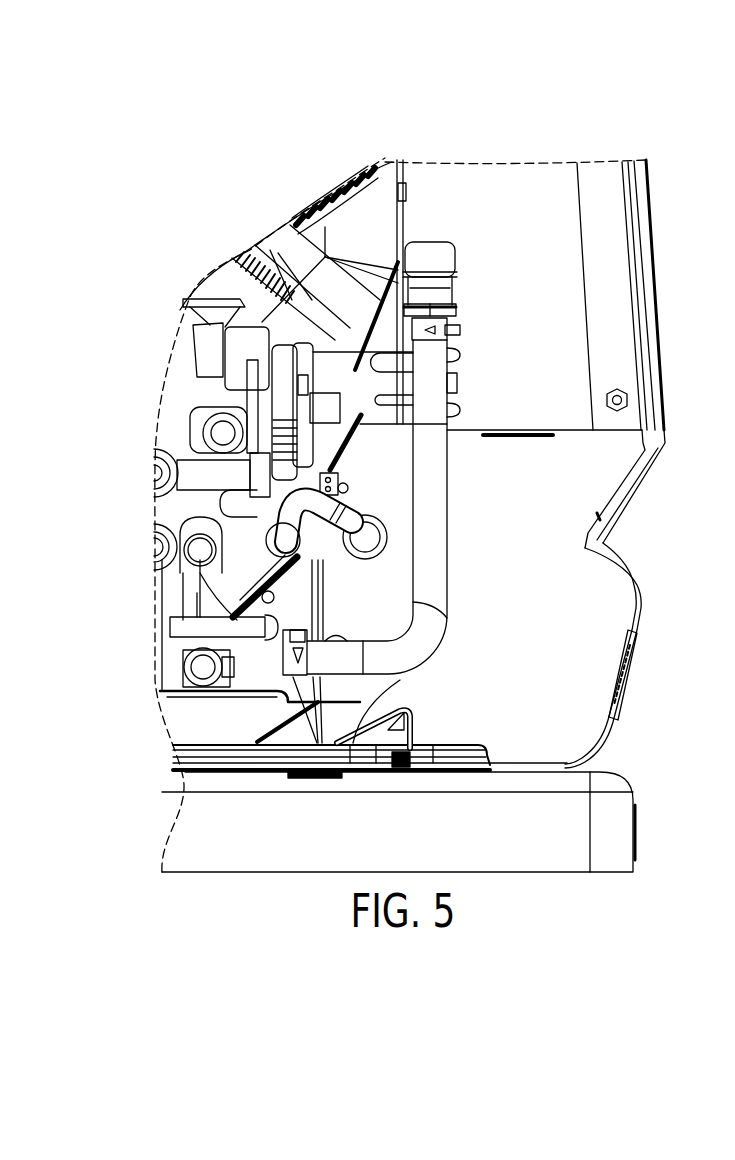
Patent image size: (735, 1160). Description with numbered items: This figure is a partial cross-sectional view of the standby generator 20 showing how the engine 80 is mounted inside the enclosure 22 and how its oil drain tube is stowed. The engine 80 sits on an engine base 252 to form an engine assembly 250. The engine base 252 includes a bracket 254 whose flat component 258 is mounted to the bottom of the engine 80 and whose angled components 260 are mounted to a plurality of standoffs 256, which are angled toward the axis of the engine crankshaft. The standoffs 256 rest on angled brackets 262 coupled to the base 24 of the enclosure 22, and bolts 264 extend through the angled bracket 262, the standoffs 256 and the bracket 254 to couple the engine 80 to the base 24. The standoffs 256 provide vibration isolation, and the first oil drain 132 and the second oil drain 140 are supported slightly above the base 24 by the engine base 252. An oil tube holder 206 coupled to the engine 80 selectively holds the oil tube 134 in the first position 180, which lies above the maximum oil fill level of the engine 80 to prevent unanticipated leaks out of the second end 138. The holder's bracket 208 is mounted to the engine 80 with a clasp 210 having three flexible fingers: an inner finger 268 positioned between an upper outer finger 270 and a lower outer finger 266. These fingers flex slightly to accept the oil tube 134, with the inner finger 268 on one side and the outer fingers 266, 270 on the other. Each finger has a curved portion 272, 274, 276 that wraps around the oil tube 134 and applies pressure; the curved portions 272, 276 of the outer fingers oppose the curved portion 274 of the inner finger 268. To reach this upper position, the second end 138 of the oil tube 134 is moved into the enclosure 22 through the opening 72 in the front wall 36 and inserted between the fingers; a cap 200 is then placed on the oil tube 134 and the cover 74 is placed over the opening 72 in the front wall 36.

The standby generator 20 is at (211, 162).
The enclosure 22 is at (549, 183).
The base 24 is at (525, 853).
The front wall 36 is at (607, 753).
The opening 72 is at (634, 636).
The cover 74 is at (630, 678).
The engine 80 is at (178, 360).
The first oil drain 132 is at (288, 628).
The oil tube 134 is at (448, 557).
The second end 138 is at (459, 290).
The second oil drain 140 is at (197, 593).
The first position 180 is at (524, 354).
The cap 200 is at (430, 253).
The oil tube holder 206 is at (354, 366).
The bracket 208 is at (283, 393).
The clasp 210 is at (430, 383).
The engine assembly 250 is at (143, 658).
The engine base 252 is at (183, 709).
The bracket 254 is at (218, 697).
The standoffs 256 is at (248, 690).
The flat component 258 is at (325, 698).
The angled component 260 is at (338, 678).
The angled bracket 262 is at (378, 703).
The bolts 264 is at (377, 680).
The lower outer finger 266 is at (520, 425).
The inner finger 268 is at (448, 386).
The upper outer finger 270 is at (457, 357).
The curved portion 272 is at (415, 437).
The curved portion 274 is at (405, 408).
The curved portion 276 is at (346, 348).